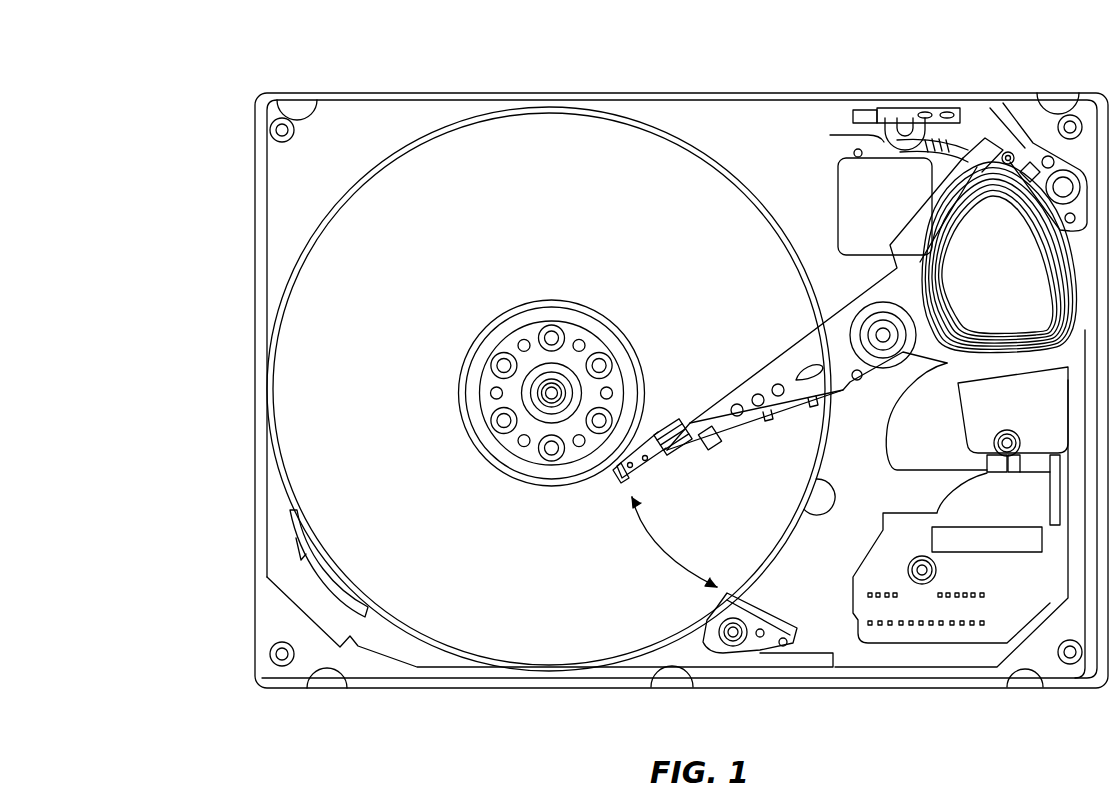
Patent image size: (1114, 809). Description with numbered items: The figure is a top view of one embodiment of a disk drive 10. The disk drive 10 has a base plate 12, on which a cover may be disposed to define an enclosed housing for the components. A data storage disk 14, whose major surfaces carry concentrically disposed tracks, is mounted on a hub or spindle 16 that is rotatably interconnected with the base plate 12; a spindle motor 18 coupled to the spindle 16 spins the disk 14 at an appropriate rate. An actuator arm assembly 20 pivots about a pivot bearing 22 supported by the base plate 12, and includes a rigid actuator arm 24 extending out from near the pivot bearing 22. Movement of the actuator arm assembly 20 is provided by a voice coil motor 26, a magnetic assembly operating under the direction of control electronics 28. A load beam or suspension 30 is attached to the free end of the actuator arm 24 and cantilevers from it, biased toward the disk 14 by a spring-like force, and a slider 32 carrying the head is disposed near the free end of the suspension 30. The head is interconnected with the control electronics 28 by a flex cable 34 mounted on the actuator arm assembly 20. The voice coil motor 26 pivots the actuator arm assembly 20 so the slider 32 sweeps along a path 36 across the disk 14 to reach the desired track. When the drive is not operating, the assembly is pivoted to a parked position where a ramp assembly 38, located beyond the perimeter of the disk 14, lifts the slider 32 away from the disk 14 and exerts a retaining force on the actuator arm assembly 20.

The disk drive 10 is at (194, 176).
The base plate 12 is at (440, 92).
The data storage disk 14 is at (561, 137).
The spindle 16 is at (577, 302).
The spindle motor 18 is at (533, 370).
The actuator arm assembly 20 is at (773, 357).
The pivot bearing 22 is at (878, 358).
The actuator arm 24 is at (753, 423).
The voice coil motor 26 is at (999, 257).
The control electronics 28 is at (928, 633).
The suspension 30 is at (652, 433).
The slider 32 is at (615, 480).
The flex cable 34 is at (895, 470).
The arcuate path of actuator 36 is at (667, 547).
The ramp assembly 38 is at (760, 652).